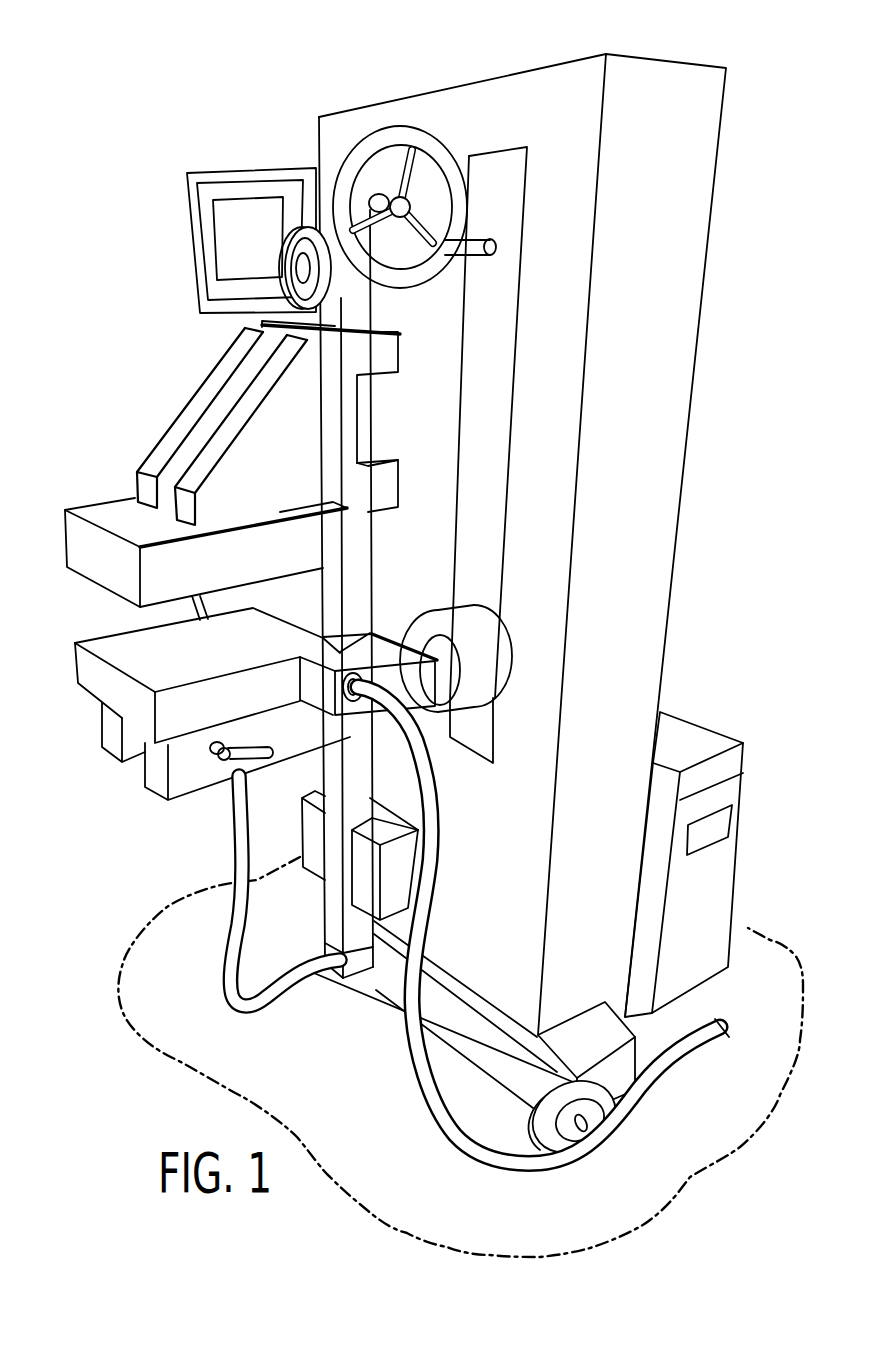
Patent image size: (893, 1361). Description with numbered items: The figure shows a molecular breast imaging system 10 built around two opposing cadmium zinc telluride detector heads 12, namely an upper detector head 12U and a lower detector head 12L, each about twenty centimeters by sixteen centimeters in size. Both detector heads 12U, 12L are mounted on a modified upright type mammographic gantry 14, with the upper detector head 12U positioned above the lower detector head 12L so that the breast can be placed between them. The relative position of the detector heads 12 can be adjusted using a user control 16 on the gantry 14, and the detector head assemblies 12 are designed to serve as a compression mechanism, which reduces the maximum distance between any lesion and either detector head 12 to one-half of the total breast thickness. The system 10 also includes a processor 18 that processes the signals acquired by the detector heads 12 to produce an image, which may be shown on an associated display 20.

The molecular breast imaging system 10 is at (222, 100).
The detector heads 12 is at (93, 476).
The upper detector head 12U is at (78, 542).
The lower detector head 12L is at (80, 670).
The mammographic gantry 14 is at (395, 353).
The user control 16 is at (428, 140).
The processor 18 is at (733, 762).
The display 20 is at (222, 222).